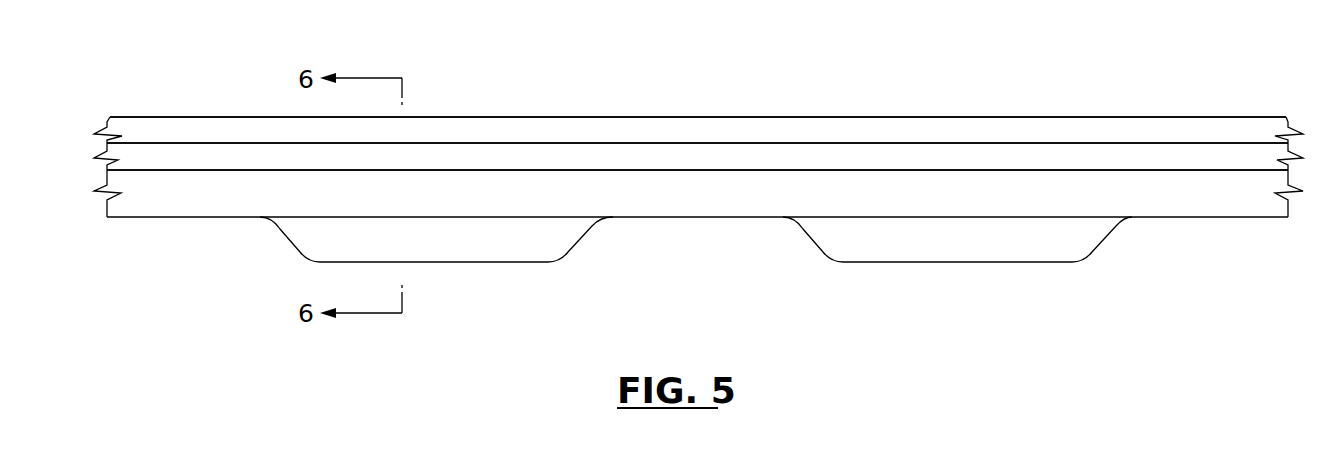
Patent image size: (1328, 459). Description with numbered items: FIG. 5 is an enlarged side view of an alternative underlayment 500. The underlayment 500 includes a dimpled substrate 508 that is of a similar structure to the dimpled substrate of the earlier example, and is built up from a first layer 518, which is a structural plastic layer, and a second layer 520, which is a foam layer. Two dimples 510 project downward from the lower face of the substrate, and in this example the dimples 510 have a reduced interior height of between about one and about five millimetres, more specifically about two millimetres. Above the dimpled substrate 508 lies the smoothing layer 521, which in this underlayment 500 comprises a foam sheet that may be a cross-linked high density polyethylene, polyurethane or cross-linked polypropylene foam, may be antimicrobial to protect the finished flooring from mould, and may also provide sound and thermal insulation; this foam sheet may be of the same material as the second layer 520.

The underlayment 500 is at (772, 308).
The dimpled substrate 508 is at (1046, 150).
The dimples 510 is at (537, 262).
The first layer 518 is at (787, 153).
The second layer 520 is at (952, 180).
The smoothing layer 521 is at (560, 125).